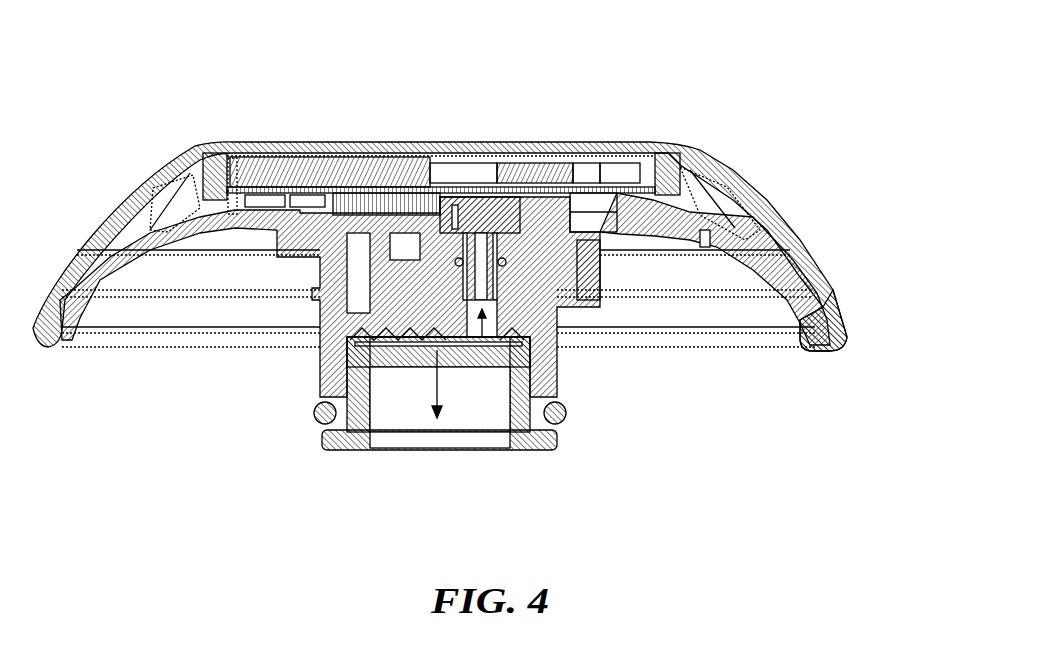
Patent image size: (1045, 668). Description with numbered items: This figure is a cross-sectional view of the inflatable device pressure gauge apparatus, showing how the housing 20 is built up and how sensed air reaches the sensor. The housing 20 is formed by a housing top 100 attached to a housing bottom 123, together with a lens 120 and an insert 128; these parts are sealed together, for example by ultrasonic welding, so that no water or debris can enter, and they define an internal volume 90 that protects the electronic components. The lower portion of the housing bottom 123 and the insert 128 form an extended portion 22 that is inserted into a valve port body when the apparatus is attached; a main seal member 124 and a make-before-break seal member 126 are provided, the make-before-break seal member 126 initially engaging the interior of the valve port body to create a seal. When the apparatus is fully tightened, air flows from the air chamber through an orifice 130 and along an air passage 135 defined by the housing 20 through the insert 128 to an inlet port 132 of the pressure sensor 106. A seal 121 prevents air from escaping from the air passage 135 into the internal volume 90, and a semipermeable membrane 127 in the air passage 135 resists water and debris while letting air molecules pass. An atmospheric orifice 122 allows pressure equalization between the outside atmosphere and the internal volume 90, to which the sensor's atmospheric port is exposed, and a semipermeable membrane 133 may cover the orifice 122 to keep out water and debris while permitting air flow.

The housing 20 is at (490, 246).
The extended portion 22 is at (490, 296).
The internal volume 90 is at (188, 181).
The housing top 100 is at (835, 280).
The pressure sensor 106 is at (490, 217).
The lens 120 is at (506, 143).
The seal 121 is at (507, 253).
The atmospheric orifice 122 is at (715, 245).
The housing bottom 123 is at (874, 310).
The main seal member 124 is at (603, 230).
The make-before-break seal member 126 is at (565, 422).
The semipermeable membrane 127 is at (527, 340).
The insert 128 is at (530, 450).
The orifice 130 is at (425, 355).
The inlet port 132 is at (597, 204).
The semipermeable membrane 133 is at (730, 212).
The air passage 135 is at (460, 384).